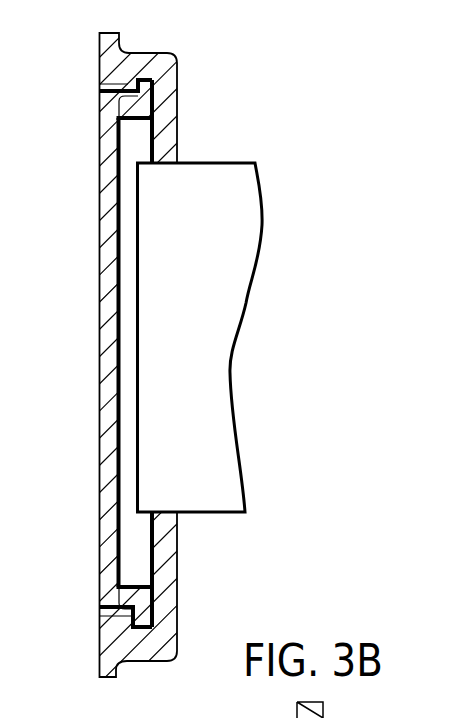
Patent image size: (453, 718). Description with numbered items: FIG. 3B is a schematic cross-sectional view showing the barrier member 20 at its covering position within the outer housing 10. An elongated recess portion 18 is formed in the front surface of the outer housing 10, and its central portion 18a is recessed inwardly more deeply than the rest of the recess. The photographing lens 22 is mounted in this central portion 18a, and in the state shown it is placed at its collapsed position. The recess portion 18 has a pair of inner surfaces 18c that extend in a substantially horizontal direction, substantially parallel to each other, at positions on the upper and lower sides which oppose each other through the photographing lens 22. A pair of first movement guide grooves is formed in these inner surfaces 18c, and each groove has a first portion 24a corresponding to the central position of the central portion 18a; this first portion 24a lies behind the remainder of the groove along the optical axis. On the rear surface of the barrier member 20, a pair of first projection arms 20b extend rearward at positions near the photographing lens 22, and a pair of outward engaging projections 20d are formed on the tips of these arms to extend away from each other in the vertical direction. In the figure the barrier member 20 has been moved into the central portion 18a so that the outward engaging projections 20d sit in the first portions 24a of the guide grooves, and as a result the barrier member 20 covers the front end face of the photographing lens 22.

The outer housing 10 is at (182, 115).
The recess portion 18 is at (137, 552).
The central portion 18a is at (143, 538).
The inner surfaces 18c is at (101, 101).
The barrier member 20 is at (90, 367).
The first projection arms 20b is at (118, 137).
The outward engaging projections 20d is at (154, 81).
The photographing lens 22 is at (238, 304).
The first portion 24a is at (142, 76).